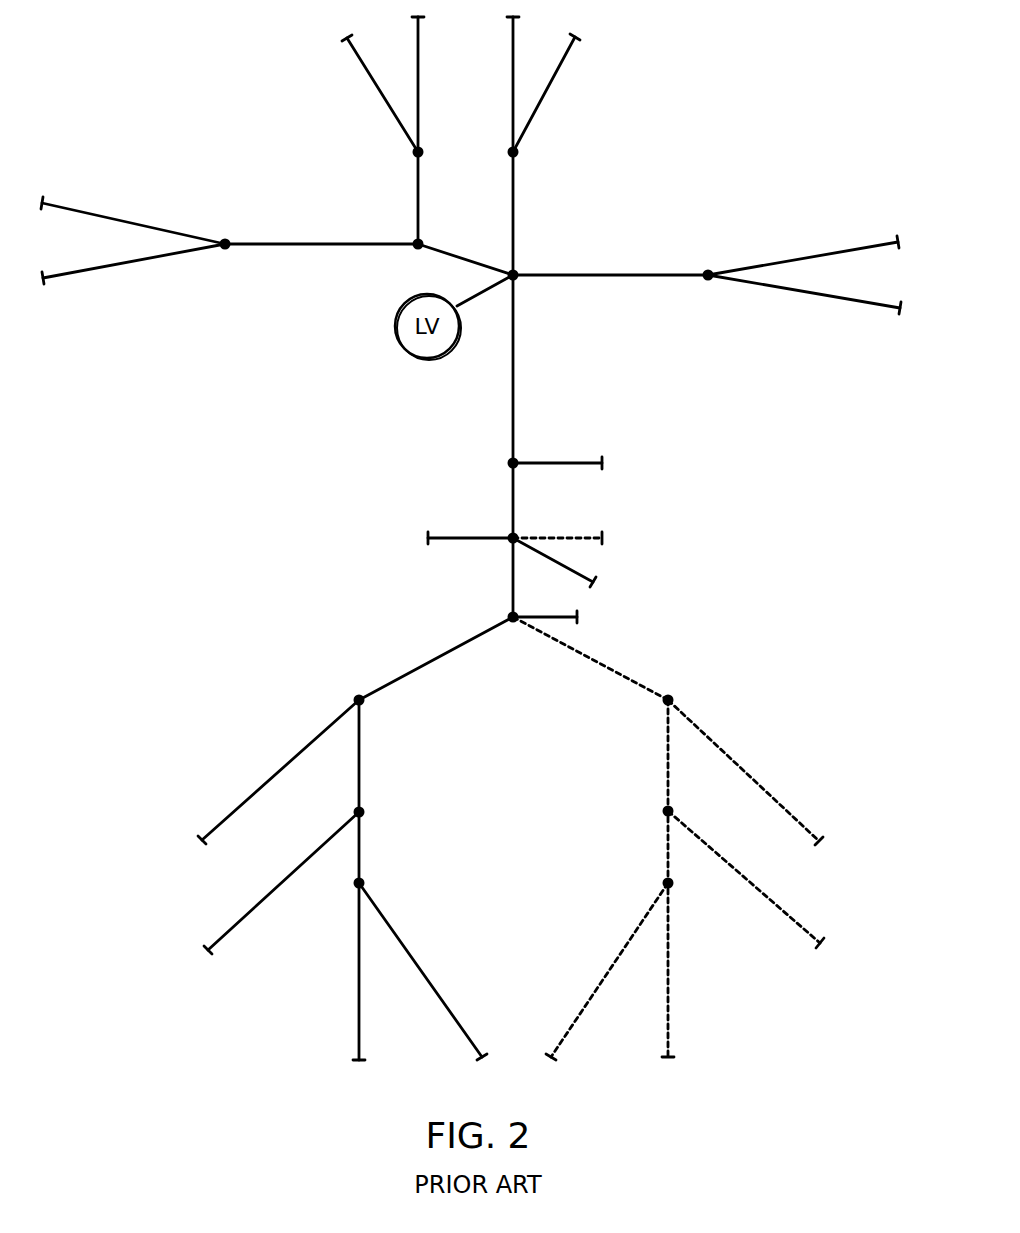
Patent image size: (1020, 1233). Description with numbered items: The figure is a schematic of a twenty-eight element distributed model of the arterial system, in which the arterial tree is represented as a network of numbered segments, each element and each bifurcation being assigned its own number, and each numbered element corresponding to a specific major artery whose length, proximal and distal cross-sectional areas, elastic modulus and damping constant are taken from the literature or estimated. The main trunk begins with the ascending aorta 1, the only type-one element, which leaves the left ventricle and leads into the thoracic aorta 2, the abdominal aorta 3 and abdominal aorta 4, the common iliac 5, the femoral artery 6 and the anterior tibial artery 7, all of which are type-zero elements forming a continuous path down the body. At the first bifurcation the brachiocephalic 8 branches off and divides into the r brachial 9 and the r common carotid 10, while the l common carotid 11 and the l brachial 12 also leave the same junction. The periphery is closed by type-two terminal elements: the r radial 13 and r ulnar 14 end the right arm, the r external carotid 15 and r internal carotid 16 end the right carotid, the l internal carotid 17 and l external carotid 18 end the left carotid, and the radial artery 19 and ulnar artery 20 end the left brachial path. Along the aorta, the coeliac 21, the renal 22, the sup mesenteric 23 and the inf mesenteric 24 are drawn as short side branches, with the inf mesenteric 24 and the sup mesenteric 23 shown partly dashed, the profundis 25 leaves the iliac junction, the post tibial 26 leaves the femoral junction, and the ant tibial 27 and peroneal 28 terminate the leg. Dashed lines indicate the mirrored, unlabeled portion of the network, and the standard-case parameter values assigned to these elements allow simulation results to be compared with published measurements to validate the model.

The ascending aorta 1 is at (495, 294).
The thoracic aorta 2 is at (507, 376).
The abdominal aorta 3 is at (509, 503).
The abdominal aorta 4 is at (506, 580).
The common iliac 5 is at (424, 661).
The femoral artery 6 is at (369, 762).
The anterior tibial artery 7 is at (356, 853).
The brachiocephalic 8 is at (456, 251).
The r brachial 9 is at (317, 260).
The r common carotid 10 is at (420, 192).
The l common carotid 11 is at (529, 208).
The l brachial 12 is at (616, 290).
The r radial 13 is at (133, 269).
The r ulnar 14 is at (133, 218).
The r external carotid 15 is at (380, 93).
The r internal carotid 16 is at (431, 84).
The l internal carotid 17 is at (501, 84).
The l external carotid 18 is at (547, 93).
The radial artery 19 is at (803, 252).
The ulnar artery 20 is at (804, 299).
The coeliac 21 is at (557, 452).
The renal 22 is at (470, 551).
The sup mesenteric 23 is at (573, 566).
The inf mesenteric 24 is at (561, 625).
The profundis 25 is at (268, 772).
The post tibial 26 is at (272, 883).
The ant tibial 27 is at (347, 971).
The peroneal 28 is at (423, 971).